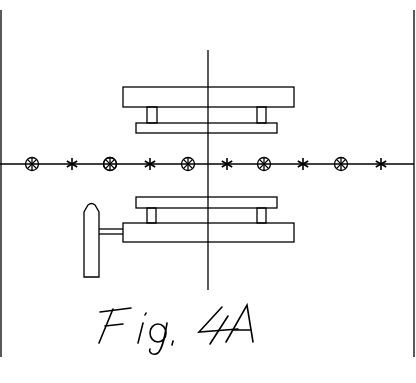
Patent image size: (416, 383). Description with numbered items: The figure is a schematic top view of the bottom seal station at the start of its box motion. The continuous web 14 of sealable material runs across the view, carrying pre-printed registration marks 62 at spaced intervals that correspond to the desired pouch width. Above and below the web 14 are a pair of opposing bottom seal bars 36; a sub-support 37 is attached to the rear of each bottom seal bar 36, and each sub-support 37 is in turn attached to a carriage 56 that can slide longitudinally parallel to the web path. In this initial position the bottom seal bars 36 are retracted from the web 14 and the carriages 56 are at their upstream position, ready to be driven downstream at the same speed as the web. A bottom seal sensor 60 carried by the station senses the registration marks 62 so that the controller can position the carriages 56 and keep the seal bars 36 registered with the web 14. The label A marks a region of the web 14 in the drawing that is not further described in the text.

The continuous web 14 is at (18, 170).
The region A is at (68, 157).
The registration marks 62 is at (107, 157).
The carriage 56 is at (246, 97).
The sub-support 37 is at (268, 115).
The bottom seal bars 36 is at (275, 128).
The bottom seal sensor 60 is at (90, 260).